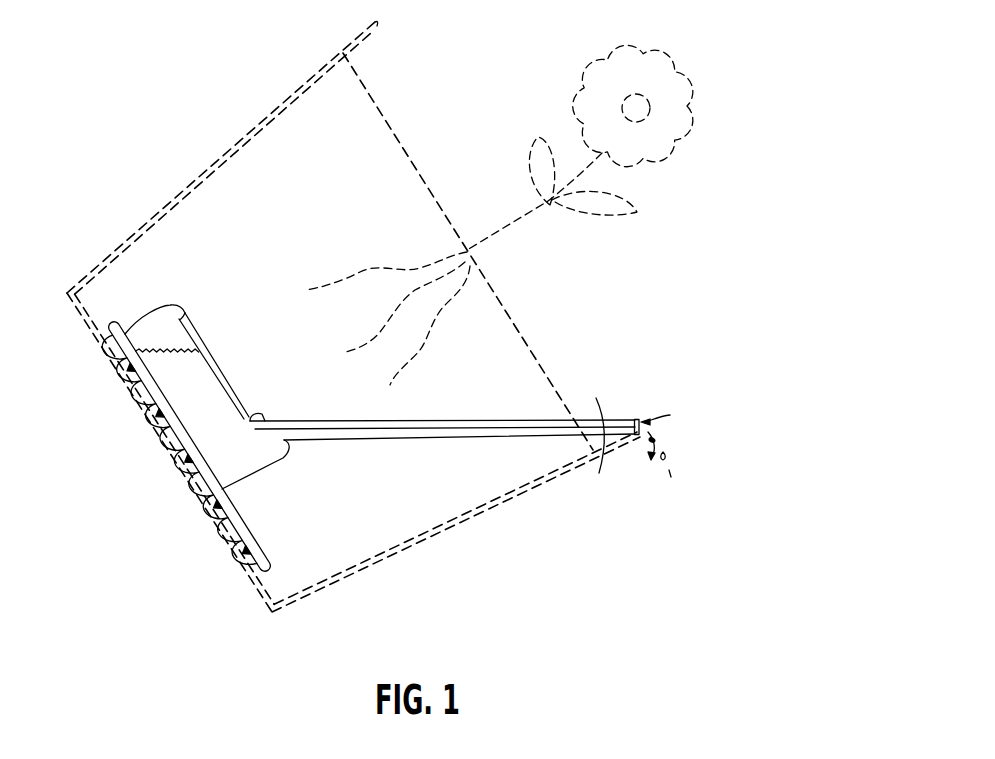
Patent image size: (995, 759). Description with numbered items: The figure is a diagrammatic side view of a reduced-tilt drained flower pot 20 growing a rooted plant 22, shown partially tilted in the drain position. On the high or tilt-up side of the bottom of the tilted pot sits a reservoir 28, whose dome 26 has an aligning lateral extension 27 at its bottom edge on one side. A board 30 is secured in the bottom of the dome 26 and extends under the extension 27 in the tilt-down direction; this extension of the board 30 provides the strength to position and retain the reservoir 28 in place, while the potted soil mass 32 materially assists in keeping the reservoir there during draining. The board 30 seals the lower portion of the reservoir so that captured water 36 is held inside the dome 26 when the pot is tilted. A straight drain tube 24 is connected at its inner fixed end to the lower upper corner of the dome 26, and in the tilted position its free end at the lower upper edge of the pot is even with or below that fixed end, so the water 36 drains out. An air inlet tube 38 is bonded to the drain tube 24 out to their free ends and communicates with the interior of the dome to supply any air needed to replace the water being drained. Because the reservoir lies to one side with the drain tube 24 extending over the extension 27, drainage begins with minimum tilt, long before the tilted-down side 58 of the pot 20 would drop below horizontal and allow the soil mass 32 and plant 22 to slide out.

The flower pot 20 is at (193, 188).
The rooted plant 22 is at (613, 70).
The drain tube 24 is at (594, 463).
The dome 26 is at (175, 334).
The aligning lateral extension 27 is at (255, 538).
The reservoir 28 is at (380, 358).
The board 30 is at (192, 447).
The potted soil mass 32 is at (515, 357).
The captured water 36 is at (230, 410).
The air inlet tube 38 is at (624, 418).
The tilted-down side 58 is at (458, 518).